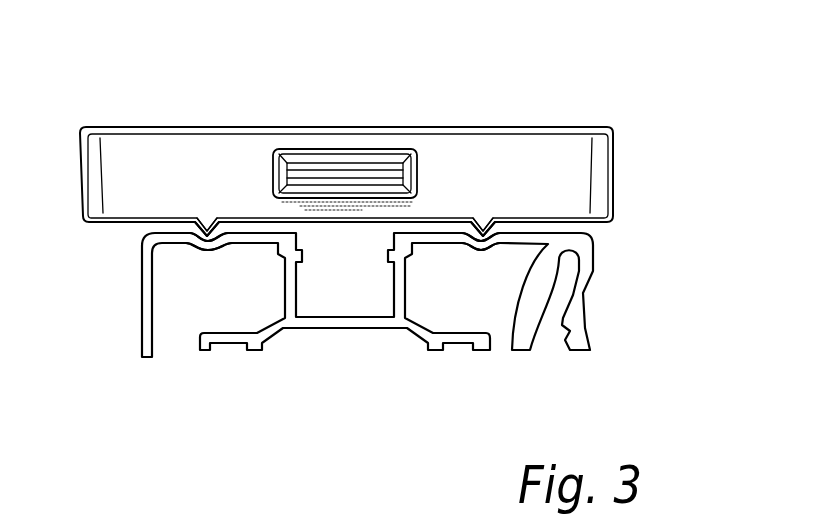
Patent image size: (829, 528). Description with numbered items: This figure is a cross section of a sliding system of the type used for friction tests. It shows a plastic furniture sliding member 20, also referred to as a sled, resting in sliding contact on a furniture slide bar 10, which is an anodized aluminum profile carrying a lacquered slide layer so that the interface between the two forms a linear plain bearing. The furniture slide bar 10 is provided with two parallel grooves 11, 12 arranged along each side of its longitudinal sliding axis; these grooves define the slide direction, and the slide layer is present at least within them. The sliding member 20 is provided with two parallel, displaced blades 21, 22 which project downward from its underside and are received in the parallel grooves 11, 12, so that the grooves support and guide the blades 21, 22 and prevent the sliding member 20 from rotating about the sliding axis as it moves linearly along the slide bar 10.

The furniture slide bar 10 is at (594, 249).
The groove 11 is at (210, 243).
The groove 12 is at (490, 243).
The plastic furniture sliding member 20 is at (402, 127).
The blade 21 is at (207, 236).
The blade 22 is at (483, 236).